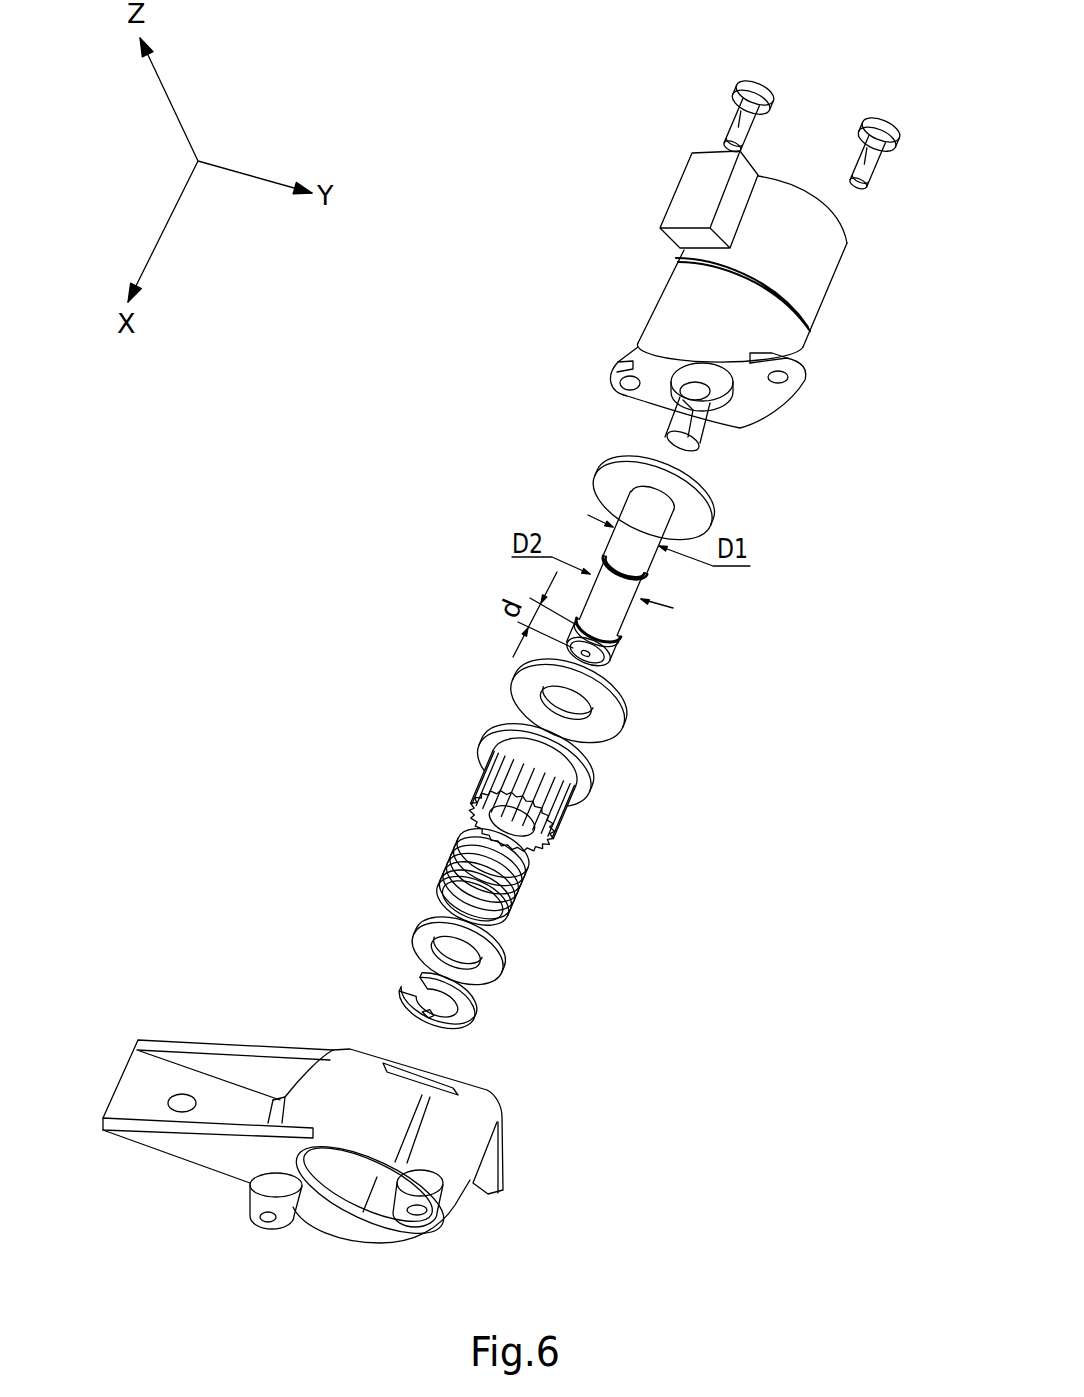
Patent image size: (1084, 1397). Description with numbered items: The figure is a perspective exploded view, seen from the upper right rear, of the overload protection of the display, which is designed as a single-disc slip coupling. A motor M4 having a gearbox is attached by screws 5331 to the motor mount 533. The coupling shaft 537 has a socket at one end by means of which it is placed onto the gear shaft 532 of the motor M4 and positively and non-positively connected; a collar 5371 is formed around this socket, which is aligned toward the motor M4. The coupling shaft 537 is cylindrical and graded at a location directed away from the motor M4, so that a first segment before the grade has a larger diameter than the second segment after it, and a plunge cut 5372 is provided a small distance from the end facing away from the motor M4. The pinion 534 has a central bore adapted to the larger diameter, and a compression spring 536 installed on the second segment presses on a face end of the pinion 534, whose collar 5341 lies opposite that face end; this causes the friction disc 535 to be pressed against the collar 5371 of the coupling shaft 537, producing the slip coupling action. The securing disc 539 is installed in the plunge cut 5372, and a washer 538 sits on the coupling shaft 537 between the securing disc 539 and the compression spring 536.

The screws 5331 is at (860, 143).
The motor M4 is at (710, 307).
The gear shaft 532 is at (677, 423).
The coupling shaft 537 is at (669, 556).
The collar 5371 is at (710, 495).
The plunge cut 5372 is at (612, 637).
The friction disc 535 is at (528, 682).
The pinion 534 is at (556, 785).
The collar of the pinion 5341 is at (590, 770).
The compression spring 536 is at (460, 863).
The washer 538 is at (490, 947).
The securing disc 539 is at (395, 990).
The motor mount 533 is at (452, 1133).